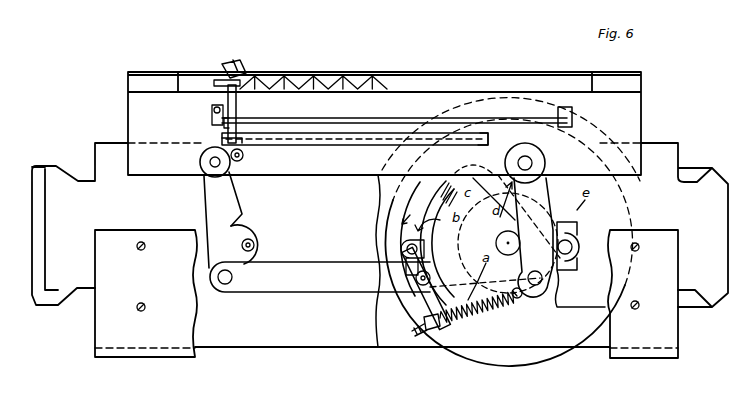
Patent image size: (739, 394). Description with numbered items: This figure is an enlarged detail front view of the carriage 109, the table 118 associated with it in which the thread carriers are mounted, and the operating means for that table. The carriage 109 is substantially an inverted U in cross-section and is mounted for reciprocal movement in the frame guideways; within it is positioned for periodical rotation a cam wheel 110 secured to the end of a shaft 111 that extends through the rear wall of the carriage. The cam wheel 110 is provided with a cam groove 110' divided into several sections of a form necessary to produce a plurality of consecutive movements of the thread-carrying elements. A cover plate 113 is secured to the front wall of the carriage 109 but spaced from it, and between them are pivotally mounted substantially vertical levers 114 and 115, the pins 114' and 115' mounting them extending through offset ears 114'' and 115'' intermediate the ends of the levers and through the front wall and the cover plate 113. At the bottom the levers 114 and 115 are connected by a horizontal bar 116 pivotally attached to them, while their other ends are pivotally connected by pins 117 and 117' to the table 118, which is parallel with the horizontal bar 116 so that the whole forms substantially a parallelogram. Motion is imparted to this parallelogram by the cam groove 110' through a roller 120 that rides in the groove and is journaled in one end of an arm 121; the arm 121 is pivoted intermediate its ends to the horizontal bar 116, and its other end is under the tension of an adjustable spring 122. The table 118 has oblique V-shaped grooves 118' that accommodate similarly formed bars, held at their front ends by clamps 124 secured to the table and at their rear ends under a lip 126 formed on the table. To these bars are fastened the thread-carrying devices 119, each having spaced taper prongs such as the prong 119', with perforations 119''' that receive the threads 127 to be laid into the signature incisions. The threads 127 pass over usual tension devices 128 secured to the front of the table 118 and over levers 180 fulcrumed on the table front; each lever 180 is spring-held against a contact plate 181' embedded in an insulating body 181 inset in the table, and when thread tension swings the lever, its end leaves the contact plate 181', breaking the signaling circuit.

The carriage 109 is at (406, 355).
The cam wheel 110 is at (511, 232).
The cam groove 110' is at (429, 243).
The shaft 111 is at (500, 243).
The cover plate 113 is at (386, 294).
The vertical lever 114 is at (234, 244).
The pin 114' is at (267, 225).
The offset ear 114'' is at (282, 245).
The vertical lever 115 is at (507, 231).
The pin 115' is at (581, 264).
The offset ear 115'' is at (590, 234).
The horizontal bar 116 is at (375, 277).
The pin 117 is at (203, 207).
The pin 117' is at (549, 163).
The table 118 is at (384, 123).
The oblique grooves 118' is at (313, 66).
The thread-carrying devices 119 is at (249, 57).
The taper prong 119' is at (216, 66).
The perforations 119''' is at (269, 94).
The roller 120 is at (426, 250).
The arm 121 is at (432, 292).
The adjustable spring 122 is at (472, 312).
The clamps 124 is at (222, 88).
The lip 126 is at (424, 74).
The threads 127 is at (246, 116).
The tension devices 128 is at (244, 157).
The lever 180 is at (229, 126).
The insulating body 181 is at (495, 135).
The contact plate 181' is at (355, 133).